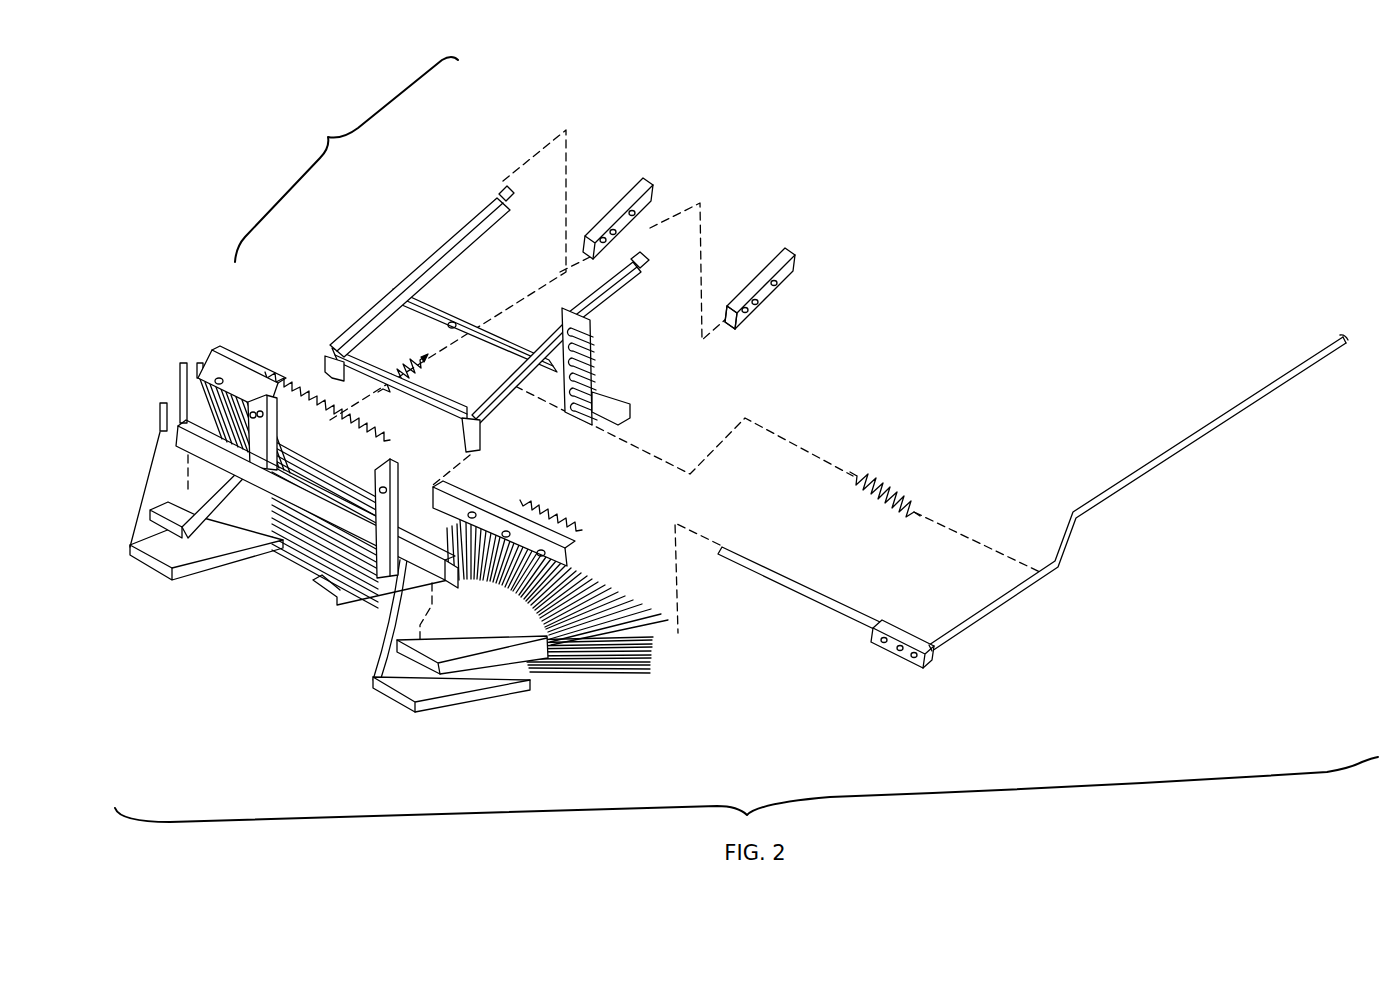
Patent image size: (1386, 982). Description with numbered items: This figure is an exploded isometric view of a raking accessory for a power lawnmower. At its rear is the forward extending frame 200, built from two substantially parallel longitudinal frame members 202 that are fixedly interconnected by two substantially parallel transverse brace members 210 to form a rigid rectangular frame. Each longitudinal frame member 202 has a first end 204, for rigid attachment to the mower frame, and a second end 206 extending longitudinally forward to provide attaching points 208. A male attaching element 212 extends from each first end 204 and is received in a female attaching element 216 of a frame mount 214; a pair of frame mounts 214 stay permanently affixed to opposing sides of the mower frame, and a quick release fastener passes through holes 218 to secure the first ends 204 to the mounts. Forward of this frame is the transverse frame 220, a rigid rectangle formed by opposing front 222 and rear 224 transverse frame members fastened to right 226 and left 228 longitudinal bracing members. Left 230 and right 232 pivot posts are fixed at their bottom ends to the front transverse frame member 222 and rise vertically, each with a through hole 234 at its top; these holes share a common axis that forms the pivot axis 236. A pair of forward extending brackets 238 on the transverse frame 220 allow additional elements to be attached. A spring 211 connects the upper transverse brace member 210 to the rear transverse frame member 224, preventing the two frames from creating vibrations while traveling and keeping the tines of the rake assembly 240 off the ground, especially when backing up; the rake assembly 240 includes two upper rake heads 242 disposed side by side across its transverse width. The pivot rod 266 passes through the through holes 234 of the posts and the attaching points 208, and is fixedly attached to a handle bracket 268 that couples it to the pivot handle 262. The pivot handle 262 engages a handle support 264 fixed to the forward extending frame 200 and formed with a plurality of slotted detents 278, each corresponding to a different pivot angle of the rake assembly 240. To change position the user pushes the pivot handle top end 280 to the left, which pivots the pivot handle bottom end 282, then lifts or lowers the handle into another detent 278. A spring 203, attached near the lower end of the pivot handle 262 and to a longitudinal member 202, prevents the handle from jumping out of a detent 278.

The forward extending frame 200 is at (346, 159).
The longitudinal frame member 202 is at (428, 258).
The spring 203 is at (880, 485).
The first end 204 is at (500, 192).
The second end 206 is at (330, 355).
The attaching points 208 is at (484, 436).
The transverse brace member 210 is at (470, 400).
The spring 211 is at (442, 330).
The male attaching element 212 is at (650, 263).
The frame mount 214 is at (655, 185).
The female attaching element 216 is at (733, 320).
The holes 218 is at (756, 297).
The transverse frame 220 is at (325, 528).
The front transverse frame member 222 is at (160, 440).
The rear transverse frame member 224 is at (220, 362).
The right longitudinal bracing member 226 is at (470, 483).
The left longitudinal bracing member 228 is at (263, 397).
The left pivot post 230 is at (392, 560).
The right pivot post 232 is at (272, 405).
The through holes 234 is at (383, 530).
The pivot axis 236 is at (637, 617).
The forward extending brackets 238 is at (152, 508).
The rake assembly 240 is at (145, 572).
The upper rake heads 242 is at (603, 557).
The pivot handle 262 is at (1145, 432).
The handle support 264 is at (622, 372).
The pivot rod 266 is at (763, 568).
The handle bracket 268 is at (900, 662).
The slotted detents 278 is at (620, 398).
The pivot handle top end 280 is at (1345, 339).
The pivot handle bottom end 282 is at (938, 655).